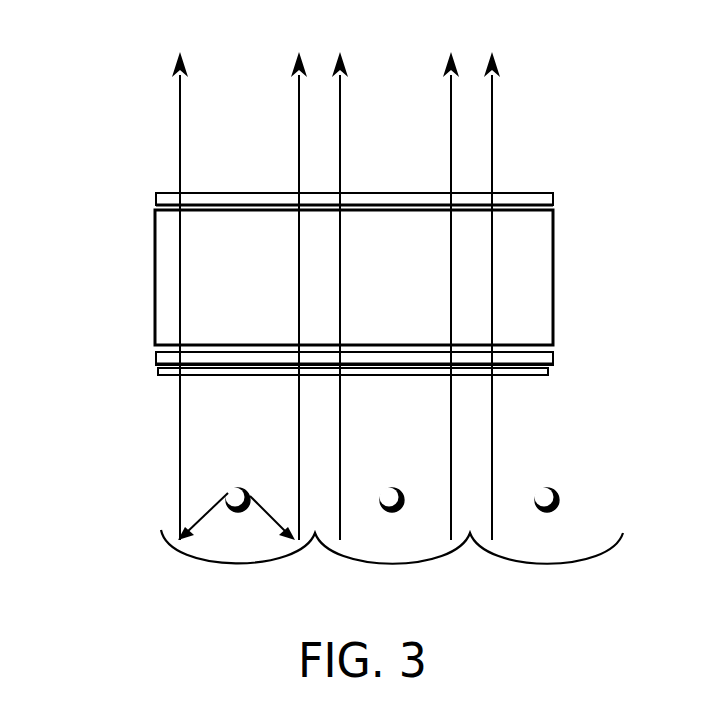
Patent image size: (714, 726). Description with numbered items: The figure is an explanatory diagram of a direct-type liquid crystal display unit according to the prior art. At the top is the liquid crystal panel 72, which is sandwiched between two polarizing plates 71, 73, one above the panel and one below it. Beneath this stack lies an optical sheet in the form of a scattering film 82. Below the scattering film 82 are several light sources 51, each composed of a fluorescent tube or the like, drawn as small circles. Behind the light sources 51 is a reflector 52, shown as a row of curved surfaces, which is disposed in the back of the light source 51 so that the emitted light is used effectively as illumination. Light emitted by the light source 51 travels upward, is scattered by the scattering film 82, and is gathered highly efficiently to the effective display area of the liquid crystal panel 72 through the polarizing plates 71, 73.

The polarizing plate 71 is at (160, 200).
The liquid crystal panel 72 is at (165, 272).
The polarizing plate 73 is at (160, 358).
The scattering film 82 is at (157, 372).
The light source 51 is at (236, 498).
The reflector 52 is at (163, 545).